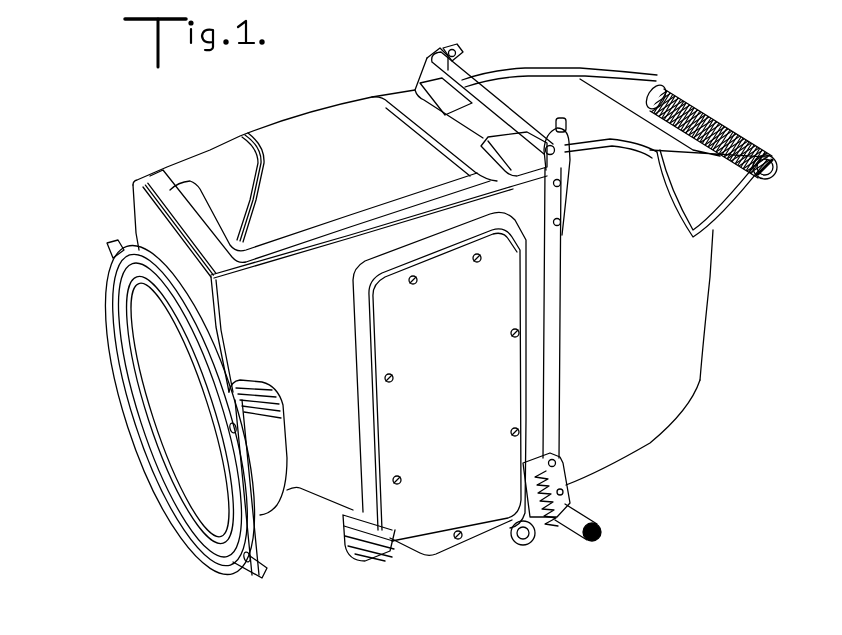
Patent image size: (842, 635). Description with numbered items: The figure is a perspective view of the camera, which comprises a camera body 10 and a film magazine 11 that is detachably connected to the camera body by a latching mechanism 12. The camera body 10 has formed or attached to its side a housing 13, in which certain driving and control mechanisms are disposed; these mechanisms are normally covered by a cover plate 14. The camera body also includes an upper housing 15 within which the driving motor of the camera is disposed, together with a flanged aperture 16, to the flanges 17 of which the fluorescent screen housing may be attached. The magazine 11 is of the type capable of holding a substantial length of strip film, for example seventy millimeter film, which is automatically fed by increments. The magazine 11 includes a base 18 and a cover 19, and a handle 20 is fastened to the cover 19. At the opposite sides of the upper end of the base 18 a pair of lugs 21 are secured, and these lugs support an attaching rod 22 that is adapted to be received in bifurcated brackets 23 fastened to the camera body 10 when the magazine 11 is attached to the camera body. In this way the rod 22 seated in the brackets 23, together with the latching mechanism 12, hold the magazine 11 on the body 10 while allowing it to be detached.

The camera body 10 is at (327, 500).
The film magazine 11 is at (648, 443).
The latching mechanism 12 is at (548, 543).
The housing 13 is at (364, 273).
The cover plate 14 is at (400, 342).
The upper housing 15 is at (276, 127).
The flanged aperture 16 is at (240, 561).
The flanges 17 is at (107, 252).
The base 18 is at (561, 337).
The cover 19 is at (600, 76).
The handle 20 is at (710, 111).
The lugs 21 is at (444, 49).
The attaching rod 22 is at (474, 77).
The bifurcated brackets 23 is at (422, 67).